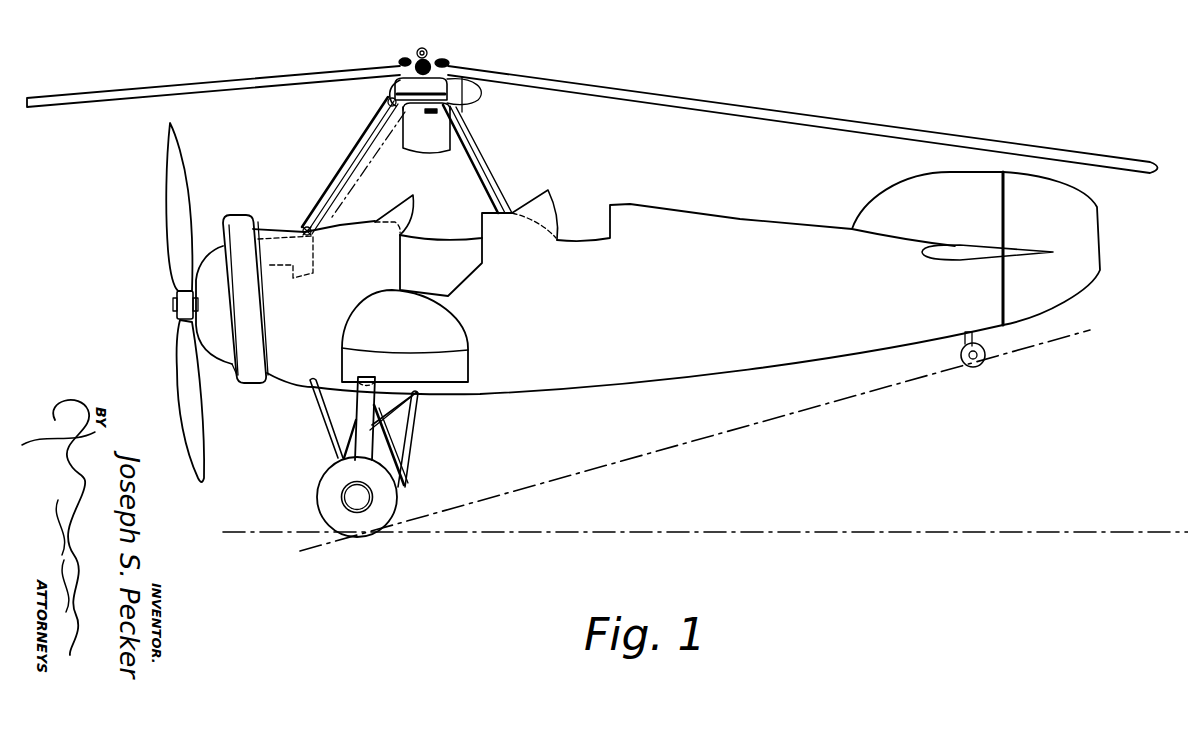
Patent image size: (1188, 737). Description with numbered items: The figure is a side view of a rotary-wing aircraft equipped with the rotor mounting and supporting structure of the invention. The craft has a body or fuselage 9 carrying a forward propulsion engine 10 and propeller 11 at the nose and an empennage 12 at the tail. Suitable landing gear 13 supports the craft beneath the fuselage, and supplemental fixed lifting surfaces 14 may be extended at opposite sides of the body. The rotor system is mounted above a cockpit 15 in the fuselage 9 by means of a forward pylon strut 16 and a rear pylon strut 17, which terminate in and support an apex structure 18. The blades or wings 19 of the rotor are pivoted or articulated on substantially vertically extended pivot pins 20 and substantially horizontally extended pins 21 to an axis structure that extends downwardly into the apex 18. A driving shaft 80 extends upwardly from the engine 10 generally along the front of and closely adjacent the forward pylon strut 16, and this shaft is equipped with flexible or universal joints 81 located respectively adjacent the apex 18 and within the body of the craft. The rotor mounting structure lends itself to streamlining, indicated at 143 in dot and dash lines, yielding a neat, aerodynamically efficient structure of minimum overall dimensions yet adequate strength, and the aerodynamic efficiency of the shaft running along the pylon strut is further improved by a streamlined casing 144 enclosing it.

The fuselage 9 is at (628, 299).
The engine 10 is at (236, 218).
The propeller 11 is at (174, 224).
The empennage 12 is at (976, 248).
The landing gear 13 is at (377, 457).
The supplemental fixed lifting surfaces 14 is at (468, 350).
The cockpit 15 is at (466, 215).
The forward pylon strut 16 is at (372, 152).
The rear pylon strut 17 is at (482, 163).
The apex structure 18 is at (433, 97).
The rotor blades 19 is at (181, 86).
The vertically extended pivot pins 20 is at (402, 62).
The horizontally extended pins 21 is at (428, 56).
The driving shaft 80 is at (355, 158).
The flexible or universal joints 81 is at (388, 102).
The streamlining 143 is at (474, 88).
The streamlined casing 144 is at (372, 125).